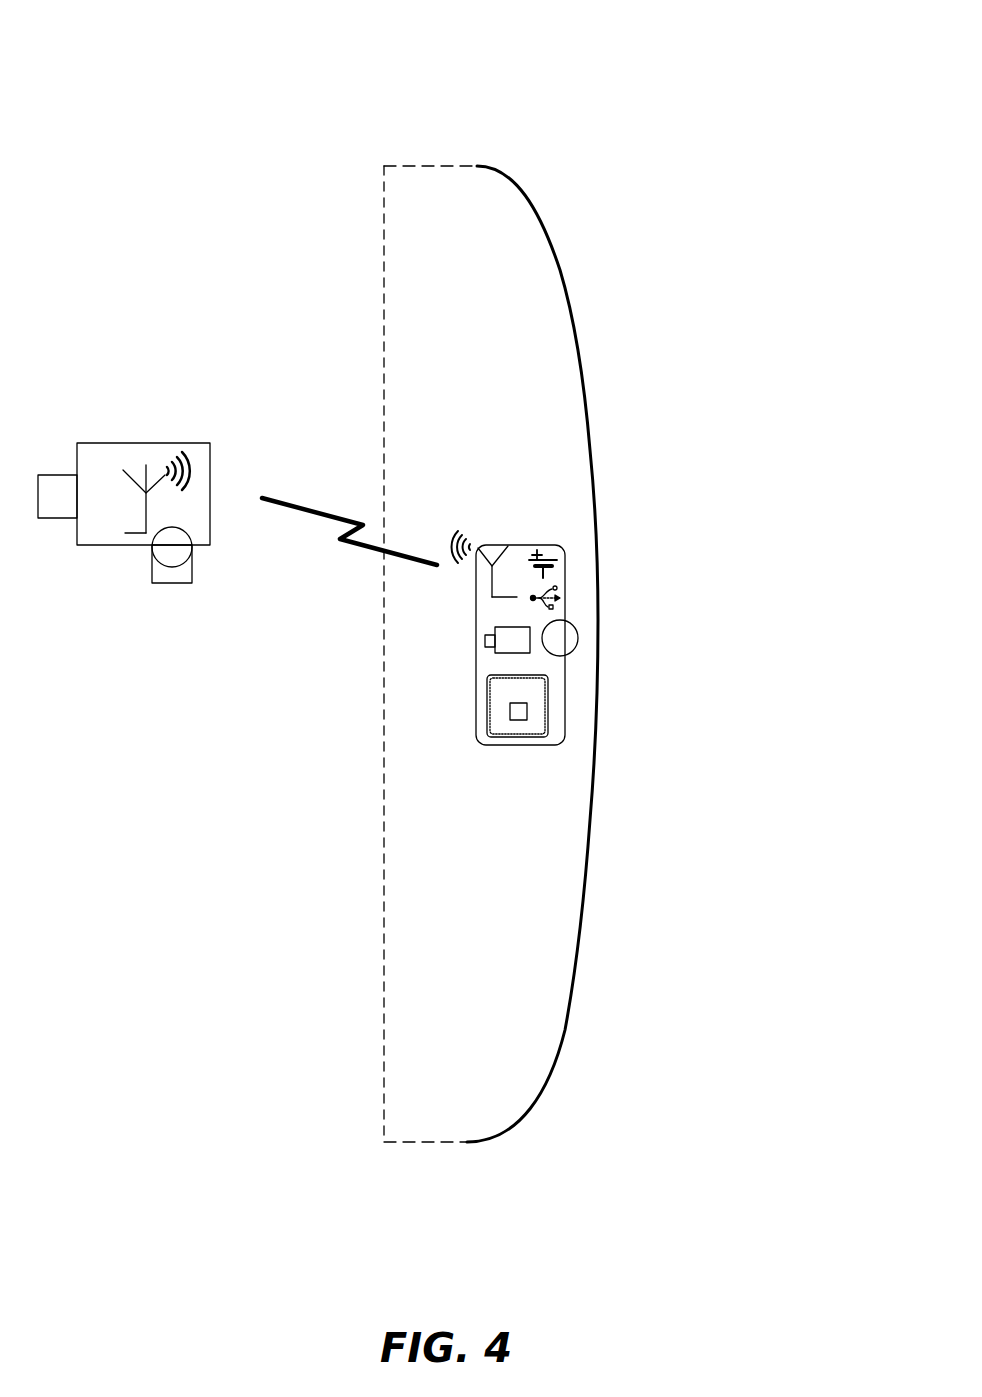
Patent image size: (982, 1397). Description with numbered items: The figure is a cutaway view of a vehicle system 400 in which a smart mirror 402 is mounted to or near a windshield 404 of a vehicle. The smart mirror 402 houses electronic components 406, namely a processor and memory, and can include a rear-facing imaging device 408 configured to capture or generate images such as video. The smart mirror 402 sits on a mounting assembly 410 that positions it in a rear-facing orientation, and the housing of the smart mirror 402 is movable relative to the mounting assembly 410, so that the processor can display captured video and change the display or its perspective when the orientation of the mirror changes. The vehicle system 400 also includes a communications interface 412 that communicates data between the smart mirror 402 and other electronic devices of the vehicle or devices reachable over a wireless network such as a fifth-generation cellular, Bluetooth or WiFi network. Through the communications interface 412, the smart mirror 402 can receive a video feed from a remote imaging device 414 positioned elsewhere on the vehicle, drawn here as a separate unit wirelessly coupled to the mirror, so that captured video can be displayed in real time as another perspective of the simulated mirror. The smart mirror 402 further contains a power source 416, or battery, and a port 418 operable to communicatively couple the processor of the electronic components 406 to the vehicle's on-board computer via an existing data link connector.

The vehicle system 400 is at (818, 77).
The smart mirror 402 is at (517, 745).
The windshield 404 is at (583, 367).
The electronic components 406 is at (487, 698).
The rear-facing imaging device 408 is at (485, 640).
The mounting assembly 410 is at (578, 638).
The communications interface 412 is at (492, 582).
The remote imaging device 414 is at (178, 443).
The power source 416 is at (548, 560).
The port 418 is at (553, 590).